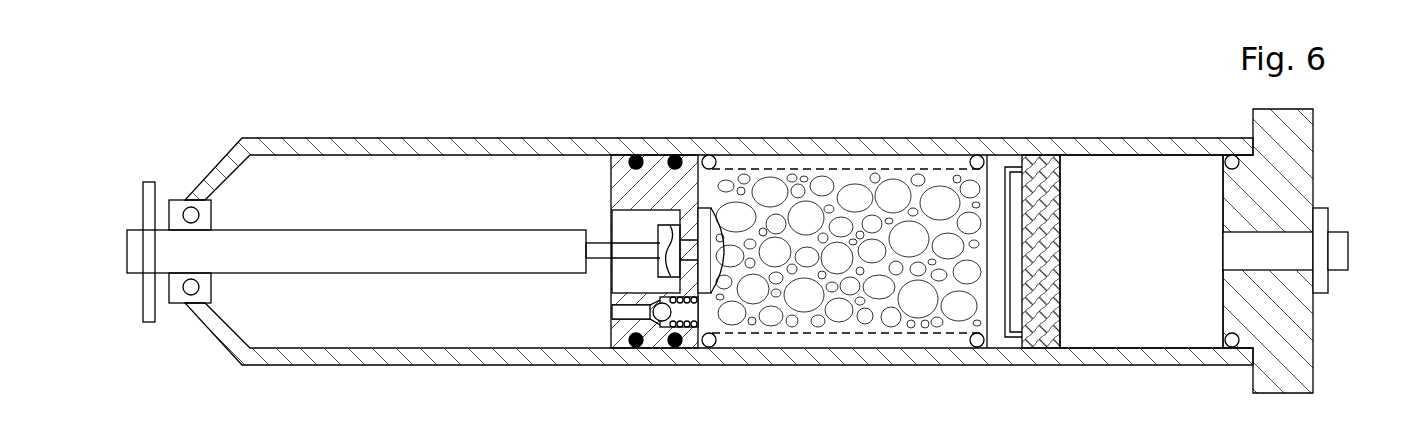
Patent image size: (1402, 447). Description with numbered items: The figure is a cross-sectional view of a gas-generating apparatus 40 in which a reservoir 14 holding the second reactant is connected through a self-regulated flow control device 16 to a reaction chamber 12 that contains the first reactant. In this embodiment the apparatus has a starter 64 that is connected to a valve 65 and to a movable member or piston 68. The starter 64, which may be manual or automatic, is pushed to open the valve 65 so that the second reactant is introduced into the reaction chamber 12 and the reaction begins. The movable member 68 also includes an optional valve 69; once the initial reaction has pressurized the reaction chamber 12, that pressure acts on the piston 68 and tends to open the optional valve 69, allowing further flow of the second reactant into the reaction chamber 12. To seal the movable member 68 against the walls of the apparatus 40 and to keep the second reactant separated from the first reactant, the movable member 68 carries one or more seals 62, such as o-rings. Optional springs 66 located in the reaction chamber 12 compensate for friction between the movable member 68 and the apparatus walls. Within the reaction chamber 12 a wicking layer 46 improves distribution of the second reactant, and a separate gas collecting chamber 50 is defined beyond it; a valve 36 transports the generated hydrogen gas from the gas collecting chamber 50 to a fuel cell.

The gas-generating apparatus 40 is at (196, 102).
The reservoir 14 is at (467, 165).
The starter 64 is at (262, 243).
The self-regulated flow control device 16 is at (610, 108).
The movable member or piston 68 is at (656, 161).
The seals 62 is at (636, 350).
The optional valve 69 is at (690, 322).
The valve 65 is at (722, 262).
The reaction chamber 12 is at (831, 185).
The springs 66 is at (912, 162).
The wicking layer 46 is at (1030, 162).
The gas collecting chamber 50 is at (1156, 170).
The valve 36 is at (1342, 251).